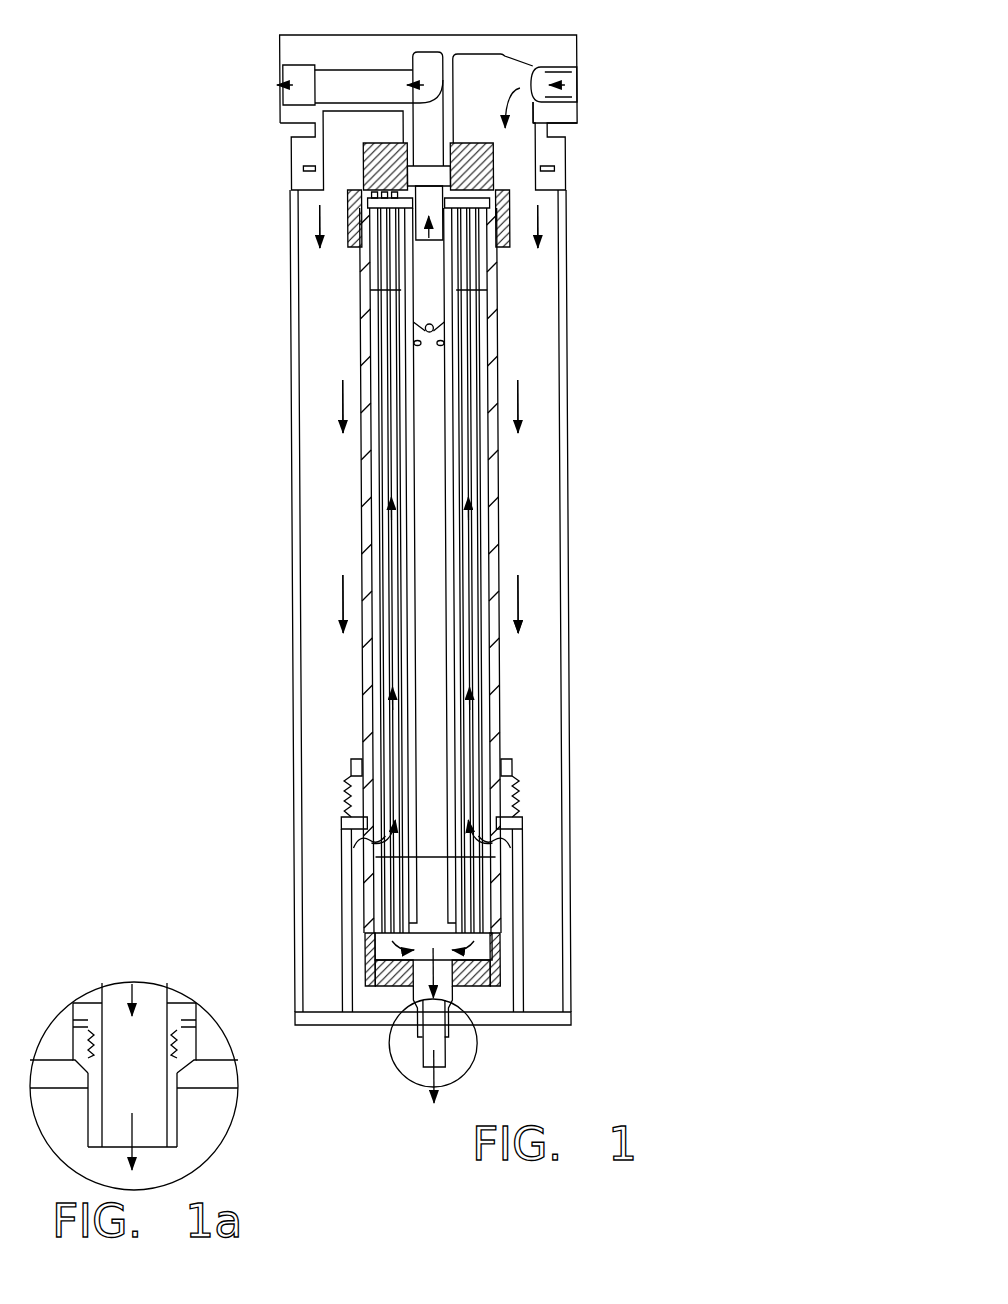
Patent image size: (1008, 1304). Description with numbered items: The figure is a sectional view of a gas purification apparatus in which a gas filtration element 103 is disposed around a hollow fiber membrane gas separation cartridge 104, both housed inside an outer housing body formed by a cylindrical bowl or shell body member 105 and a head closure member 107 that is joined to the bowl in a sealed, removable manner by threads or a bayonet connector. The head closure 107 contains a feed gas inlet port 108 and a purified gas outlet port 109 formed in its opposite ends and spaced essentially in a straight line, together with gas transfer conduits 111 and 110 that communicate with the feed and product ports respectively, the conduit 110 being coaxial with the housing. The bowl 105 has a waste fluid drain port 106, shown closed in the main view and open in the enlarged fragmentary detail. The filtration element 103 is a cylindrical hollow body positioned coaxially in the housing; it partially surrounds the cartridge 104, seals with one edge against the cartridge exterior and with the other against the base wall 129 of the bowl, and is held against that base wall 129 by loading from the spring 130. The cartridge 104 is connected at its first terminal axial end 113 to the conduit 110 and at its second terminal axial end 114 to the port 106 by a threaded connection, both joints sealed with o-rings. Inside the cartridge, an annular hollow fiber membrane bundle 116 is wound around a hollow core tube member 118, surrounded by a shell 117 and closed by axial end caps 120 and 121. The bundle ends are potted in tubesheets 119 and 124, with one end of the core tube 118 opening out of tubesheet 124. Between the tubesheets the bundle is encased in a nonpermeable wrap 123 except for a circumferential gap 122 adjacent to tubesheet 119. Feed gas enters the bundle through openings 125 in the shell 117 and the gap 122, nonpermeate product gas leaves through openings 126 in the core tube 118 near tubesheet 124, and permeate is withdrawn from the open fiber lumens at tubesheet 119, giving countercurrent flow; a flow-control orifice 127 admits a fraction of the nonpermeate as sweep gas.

The gas filtration element 103 is at (523, 890).
The hollow fiber membrane gas separation cartridge 104 is at (539, 311).
The bowl or shell body member 105 is at (567, 596).
The waste fluid drain port 106 is at (434, 1038).
The head closure member 107 is at (566, 50).
The feed gas inlet port 108 is at (560, 74).
The purified gas outlet port 109 is at (295, 99).
The gas transfer conduit 110 is at (419, 124).
The gas transfer conduit 111 is at (493, 100).
The first terminal axial end 113 is at (366, 152).
The second terminal axial end 114 is at (485, 978).
The annular hollow fiber membrane bundle 116 is at (468, 474).
The shell 117 is at (505, 545).
The hollow core tube member 118 is at (458, 660).
The tubesheet 119 is at (486, 913).
The axial end closure or cap 120 is at (491, 968).
The axial end closure or cap 121 is at (369, 196).
The non-encased circumferential region or gap 122 is at (486, 807).
The nonpermeable film barrier or wrap 123 is at (488, 408).
The tubesheet 124 is at (474, 239).
The openings 125 is at (506, 842).
The openings 126 is at (415, 344).
The flow-control orifice 127 is at (392, 214).
The base wall 129 is at (342, 1022).
The spring 130 is at (361, 776).